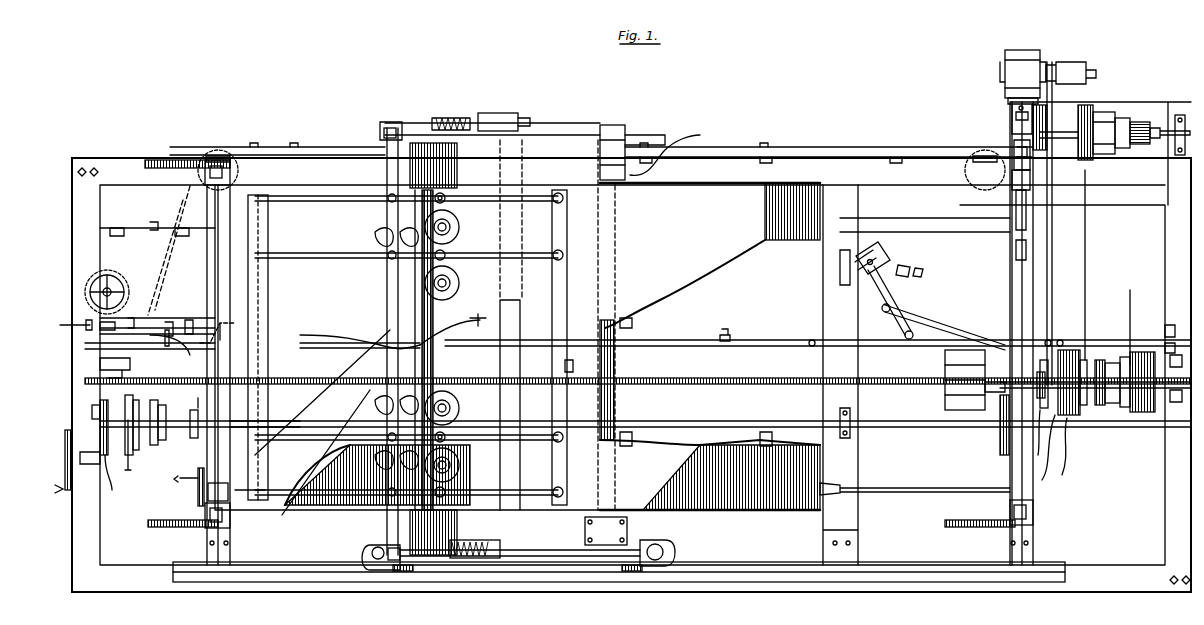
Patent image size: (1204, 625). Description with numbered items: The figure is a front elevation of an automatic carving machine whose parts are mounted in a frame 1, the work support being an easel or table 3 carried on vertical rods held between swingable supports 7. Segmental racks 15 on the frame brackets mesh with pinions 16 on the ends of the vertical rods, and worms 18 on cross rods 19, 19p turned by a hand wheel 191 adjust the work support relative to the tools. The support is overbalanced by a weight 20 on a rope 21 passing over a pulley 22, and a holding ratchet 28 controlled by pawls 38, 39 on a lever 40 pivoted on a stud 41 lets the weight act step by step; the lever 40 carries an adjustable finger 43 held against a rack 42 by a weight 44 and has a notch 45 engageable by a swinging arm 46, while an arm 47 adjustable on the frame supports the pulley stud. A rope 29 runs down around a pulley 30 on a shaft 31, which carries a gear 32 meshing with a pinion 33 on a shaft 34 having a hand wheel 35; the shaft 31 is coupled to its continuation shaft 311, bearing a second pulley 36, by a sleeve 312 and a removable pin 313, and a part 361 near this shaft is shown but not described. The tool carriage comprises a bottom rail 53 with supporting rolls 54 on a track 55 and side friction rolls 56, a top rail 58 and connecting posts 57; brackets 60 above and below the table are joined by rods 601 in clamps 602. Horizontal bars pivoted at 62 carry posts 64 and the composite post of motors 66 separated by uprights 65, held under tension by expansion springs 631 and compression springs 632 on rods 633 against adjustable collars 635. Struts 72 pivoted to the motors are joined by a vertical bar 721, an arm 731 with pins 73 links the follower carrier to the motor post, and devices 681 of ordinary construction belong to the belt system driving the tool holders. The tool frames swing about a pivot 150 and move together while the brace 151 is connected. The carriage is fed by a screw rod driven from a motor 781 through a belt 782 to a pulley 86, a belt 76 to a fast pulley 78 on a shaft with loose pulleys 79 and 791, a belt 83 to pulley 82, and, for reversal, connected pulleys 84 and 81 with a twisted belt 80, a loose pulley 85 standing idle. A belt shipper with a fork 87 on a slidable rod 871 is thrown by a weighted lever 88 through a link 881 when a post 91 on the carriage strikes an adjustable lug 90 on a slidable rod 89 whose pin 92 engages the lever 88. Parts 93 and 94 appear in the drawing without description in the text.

The frame 1 is at (1150, 548).
The easel 3 is at (517, 346).
The swingable support 7 is at (1034, 510).
The segmental rack 15 is at (168, 160).
The pinion 16 is at (228, 162).
The worm 18 is at (232, 498).
The rod 19 is at (262, 495).
The rod 19p is at (918, 492).
The hand wheel 191 is at (200, 490).
The weight 20 is at (945, 358).
The rope 21 is at (965, 238).
The pulley 22 is at (218, 152).
The holding ratchet 28 is at (90, 275).
The rope 29 is at (132, 378).
The pulley 30 is at (130, 456).
The shaft 31 is at (178, 424).
The shaft 311 is at (768, 426).
The sleeve 312 is at (165, 428).
The pin 313 is at (198, 398).
The gear 32 is at (96, 408).
The pinion 33 is at (112, 490).
The shaft 34 is at (90, 465).
The hand wheel 35 is at (66, 458).
The pulley 36 is at (1000, 452).
The collar 361 is at (192, 440).
The pawl 38 is at (128, 318).
The pawl 39 is at (85, 322).
The lever 40 is at (165, 325).
The stud 41 is at (1030, 172).
The rack 42 is at (165, 350).
The finger 43 is at (178, 315).
The weight 44 is at (188, 318).
The notch 45 is at (746, 386).
The swinging arm 46 is at (215, 335).
The arm 47 is at (170, 352).
The bottom rail 53 is at (528, 558).
The supporting roll 54 is at (368, 548).
The track 55 is at (340, 582).
The side friction roll 56 is at (402, 572).
The post 57 is at (660, 160).
The top rail 58 is at (600, 132).
The bracket 60 is at (425, 128).
The rod 601 is at (386, 135).
The clamp 602 is at (395, 128).
The pivot 62 is at (520, 400).
The expansion spring 631 is at (460, 158).
The compression spring 632 is at (470, 126).
The rod 633 is at (606, 126).
The adjustable collar 635 is at (498, 120).
The post 64 is at (460, 292).
The upright 65 is at (448, 222).
The motor 66 is at (452, 278).
The device of ordinary construction 681 is at (380, 236).
The strut 72 is at (330, 258).
The vertical bar 721 is at (568, 205).
The pin 73 is at (333, 342).
The arm 731 is at (350, 340).
The belt 76 is at (1040, 262).
The pulley 78 is at (1052, 118).
The motor 781 is at (1015, 48).
The belt 782 is at (1055, 208).
The pulley 79 is at (1098, 117).
The pulley 791 is at (1140, 120).
The twisted belt 80 is at (1085, 212).
The pulley 81 is at (1098, 410).
The pulley 82 is at (1144, 413).
The belt 83 is at (1130, 320).
The pulley 84 is at (1076, 415).
The loose pulley 85 is at (1070, 455).
The pulley 86 is at (1045, 455).
The fork 87 is at (1062, 340).
The slidable rod 871 is at (1110, 340).
The weighted lever 88 is at (855, 280).
The link 881 is at (905, 318).
The slidable rod 89 is at (690, 342).
The adjustable lug 90 is at (726, 343).
The post 91 is at (645, 344).
The pin 92 is at (812, 347).
The block 93 is at (580, 380).
The pin 94 is at (478, 321).
The pivot 150 is at (448, 256).
The brace 151 is at (322, 422).